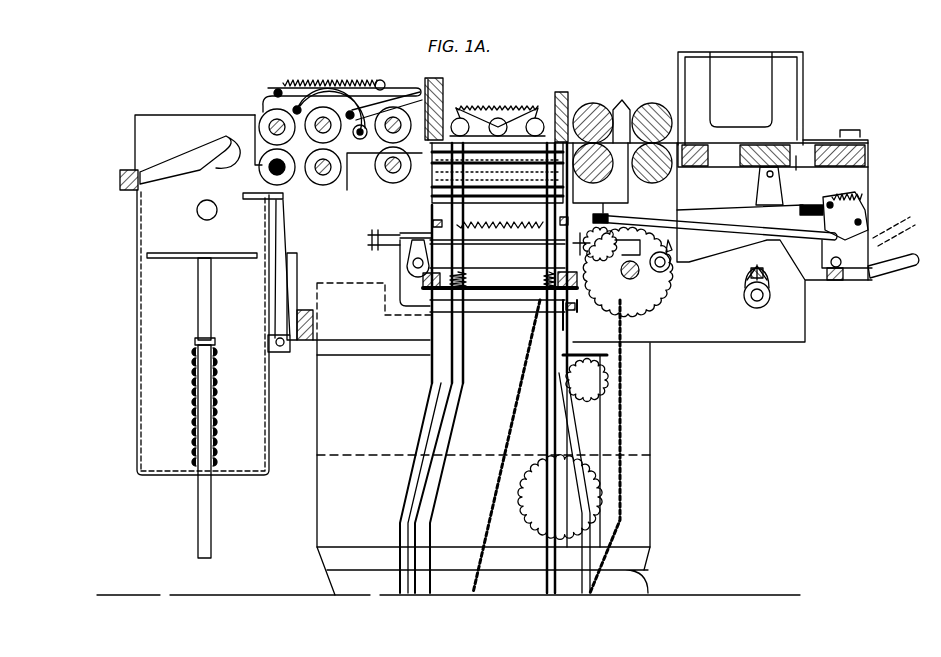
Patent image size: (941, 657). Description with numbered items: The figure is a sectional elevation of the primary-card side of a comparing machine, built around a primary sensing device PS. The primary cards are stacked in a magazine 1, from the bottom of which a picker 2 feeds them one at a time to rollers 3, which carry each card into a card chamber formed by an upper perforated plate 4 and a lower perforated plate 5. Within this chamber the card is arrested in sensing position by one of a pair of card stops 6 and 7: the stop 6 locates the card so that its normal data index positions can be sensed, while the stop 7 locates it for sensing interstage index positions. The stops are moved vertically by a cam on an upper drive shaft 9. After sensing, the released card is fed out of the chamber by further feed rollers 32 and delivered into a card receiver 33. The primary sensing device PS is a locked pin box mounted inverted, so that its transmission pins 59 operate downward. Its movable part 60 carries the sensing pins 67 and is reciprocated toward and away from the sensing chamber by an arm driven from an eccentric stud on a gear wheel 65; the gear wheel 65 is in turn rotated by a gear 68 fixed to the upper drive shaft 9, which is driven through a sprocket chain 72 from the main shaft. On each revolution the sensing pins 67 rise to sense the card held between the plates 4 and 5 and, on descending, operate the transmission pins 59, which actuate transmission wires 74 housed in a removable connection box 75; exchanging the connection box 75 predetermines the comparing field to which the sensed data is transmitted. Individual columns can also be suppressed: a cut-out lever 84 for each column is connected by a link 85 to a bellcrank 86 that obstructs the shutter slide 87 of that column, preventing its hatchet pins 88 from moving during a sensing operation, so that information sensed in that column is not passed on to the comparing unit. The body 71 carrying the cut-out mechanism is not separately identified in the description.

The magazine 1 is at (778, 110).
The picker 2 is at (805, 140).
The rollers 3 is at (640, 112).
The upper perforated plate 4 is at (576, 112).
The lower perforated plate 5 is at (704, 222).
The card stop 6 is at (447, 118).
The card stop 7 is at (437, 98).
The upper drive shaft 9 is at (662, 270).
The primary sensing device PS is at (531, 100).
The feed rollers 32 is at (375, 184).
The card receiver 33 is at (160, 218).
The transmission pins 59 is at (566, 314).
The movable part 60 is at (432, 130).
The gear wheel 65 is at (655, 312).
The sensing pins 67 is at (432, 197).
The gear 68 is at (633, 380).
The body 71 is at (795, 327).
The sprocket chain 72 is at (625, 400).
The transmission wires 74 is at (440, 396).
The connection box 75 is at (414, 424).
The cut-out lever 84 is at (899, 268).
The link 85 is at (808, 232).
The bellcrank 86 is at (606, 255).
The shutter slide 87 is at (410, 232).
The hatchet pins 88 is at (447, 213).